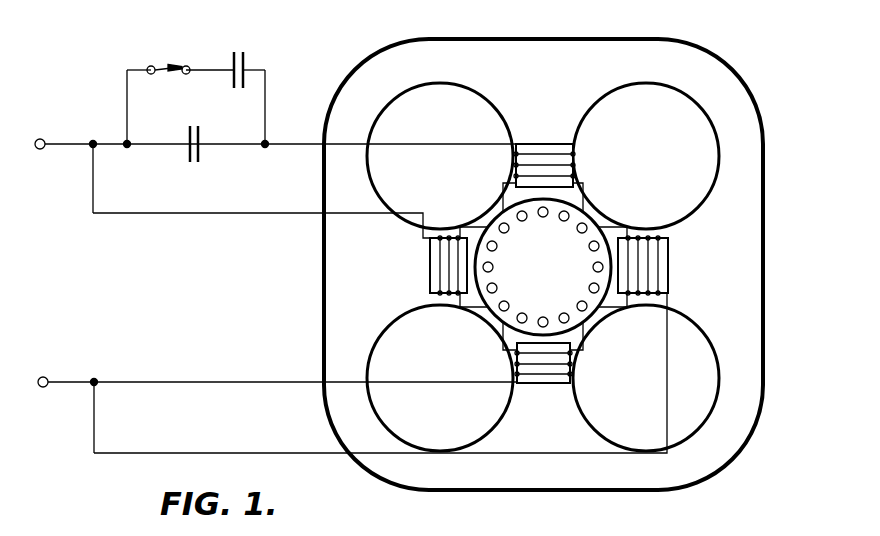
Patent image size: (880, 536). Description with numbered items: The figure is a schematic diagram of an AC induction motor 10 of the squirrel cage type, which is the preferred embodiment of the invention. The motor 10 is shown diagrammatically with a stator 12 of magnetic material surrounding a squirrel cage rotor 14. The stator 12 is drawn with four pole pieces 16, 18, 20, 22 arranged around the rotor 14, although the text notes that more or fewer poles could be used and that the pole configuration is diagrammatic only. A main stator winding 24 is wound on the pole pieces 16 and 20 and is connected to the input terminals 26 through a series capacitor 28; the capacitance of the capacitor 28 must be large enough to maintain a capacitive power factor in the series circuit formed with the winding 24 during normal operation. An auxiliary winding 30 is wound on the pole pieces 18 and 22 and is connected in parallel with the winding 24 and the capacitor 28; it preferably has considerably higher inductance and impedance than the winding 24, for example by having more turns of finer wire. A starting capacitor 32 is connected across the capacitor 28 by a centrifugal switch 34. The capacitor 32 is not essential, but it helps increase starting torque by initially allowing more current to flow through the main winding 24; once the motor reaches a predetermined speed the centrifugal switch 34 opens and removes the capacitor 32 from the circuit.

The AC induction motor 10 is at (579, 264).
The stator 12 is at (740, 90).
The squirrel cage rotor 14 is at (588, 210).
The pole piece 16 is at (577, 137).
The pole piece 18 is at (672, 300).
The pole piece 20 is at (516, 388).
The pole piece 22 is at (410, 303).
The main stator winding 24 is at (575, 156).
The input terminals 26 is at (40, 150).
The series capacitor 28 is at (196, 164).
The auxiliary winding 30 is at (428, 263).
The starting capacitor 32 is at (240, 50).
The centrifugal switch 34 is at (165, 66).